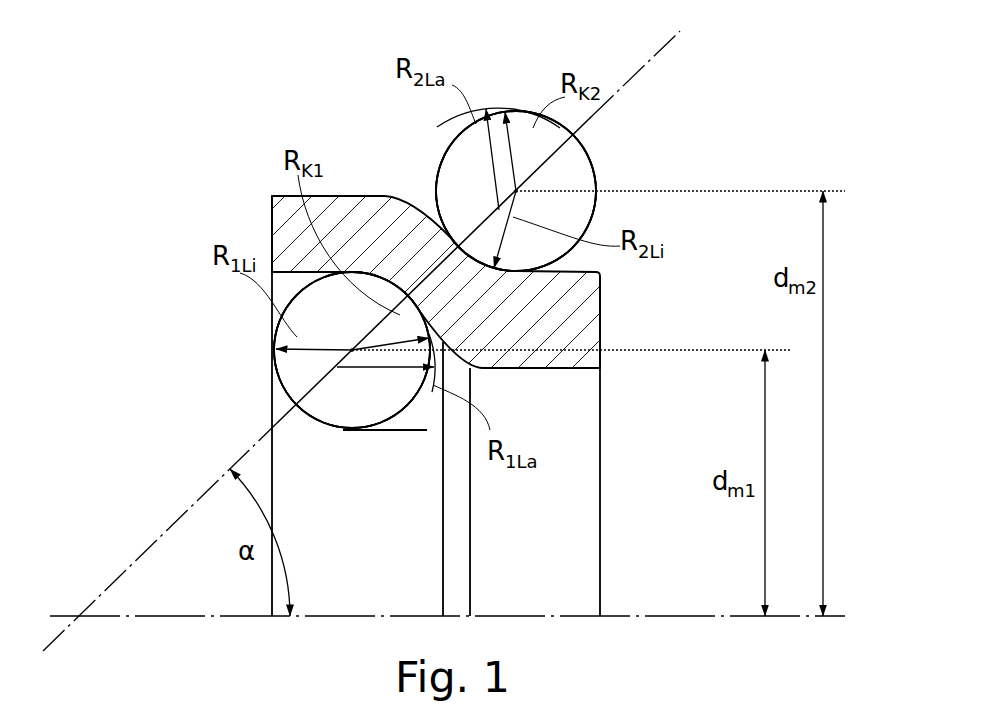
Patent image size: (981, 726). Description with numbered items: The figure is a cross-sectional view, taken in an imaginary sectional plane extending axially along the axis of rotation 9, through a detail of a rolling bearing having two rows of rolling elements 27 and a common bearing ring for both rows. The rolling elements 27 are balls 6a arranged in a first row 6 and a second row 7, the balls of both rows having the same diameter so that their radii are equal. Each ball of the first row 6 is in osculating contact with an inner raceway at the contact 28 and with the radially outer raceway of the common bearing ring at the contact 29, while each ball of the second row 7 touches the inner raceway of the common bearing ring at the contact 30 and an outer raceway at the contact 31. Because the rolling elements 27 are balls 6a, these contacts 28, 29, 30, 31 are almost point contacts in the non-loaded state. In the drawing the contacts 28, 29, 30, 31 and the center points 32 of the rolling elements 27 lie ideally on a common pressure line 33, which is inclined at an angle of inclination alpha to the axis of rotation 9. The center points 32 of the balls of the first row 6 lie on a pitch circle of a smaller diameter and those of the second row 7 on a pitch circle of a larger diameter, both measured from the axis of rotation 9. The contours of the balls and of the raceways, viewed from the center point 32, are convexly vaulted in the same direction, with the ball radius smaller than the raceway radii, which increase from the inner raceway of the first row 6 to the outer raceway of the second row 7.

The rolling elements 27 is at (517, 112).
The second row 7 is at (516, 137).
The first row 6 is at (308, 350).
The balls 6a is at (403, 216).
The contact 28 is at (296, 410).
The contact 29 is at (436, 290).
The contact 30 is at (428, 220).
The contact 31 is at (579, 140).
The center point 32 is at (522, 186).
The pressure line 33 is at (138, 556).
The axis of rotation 9 is at (690, 626).